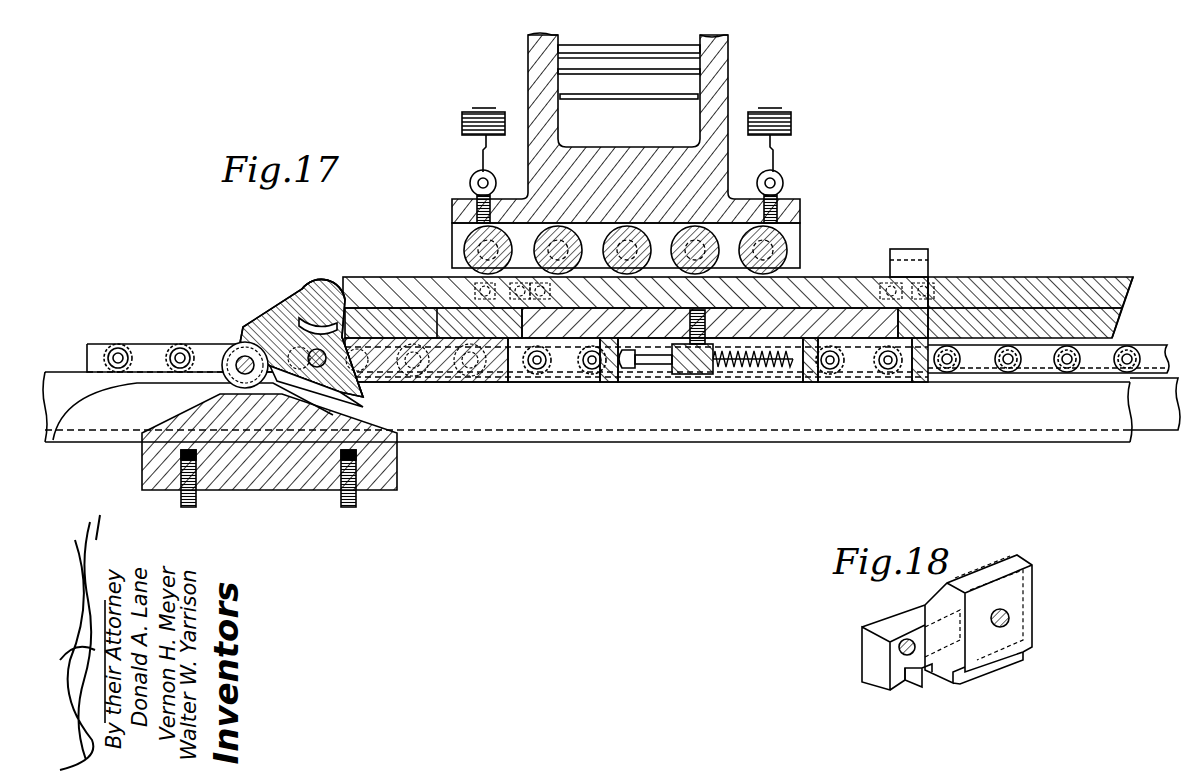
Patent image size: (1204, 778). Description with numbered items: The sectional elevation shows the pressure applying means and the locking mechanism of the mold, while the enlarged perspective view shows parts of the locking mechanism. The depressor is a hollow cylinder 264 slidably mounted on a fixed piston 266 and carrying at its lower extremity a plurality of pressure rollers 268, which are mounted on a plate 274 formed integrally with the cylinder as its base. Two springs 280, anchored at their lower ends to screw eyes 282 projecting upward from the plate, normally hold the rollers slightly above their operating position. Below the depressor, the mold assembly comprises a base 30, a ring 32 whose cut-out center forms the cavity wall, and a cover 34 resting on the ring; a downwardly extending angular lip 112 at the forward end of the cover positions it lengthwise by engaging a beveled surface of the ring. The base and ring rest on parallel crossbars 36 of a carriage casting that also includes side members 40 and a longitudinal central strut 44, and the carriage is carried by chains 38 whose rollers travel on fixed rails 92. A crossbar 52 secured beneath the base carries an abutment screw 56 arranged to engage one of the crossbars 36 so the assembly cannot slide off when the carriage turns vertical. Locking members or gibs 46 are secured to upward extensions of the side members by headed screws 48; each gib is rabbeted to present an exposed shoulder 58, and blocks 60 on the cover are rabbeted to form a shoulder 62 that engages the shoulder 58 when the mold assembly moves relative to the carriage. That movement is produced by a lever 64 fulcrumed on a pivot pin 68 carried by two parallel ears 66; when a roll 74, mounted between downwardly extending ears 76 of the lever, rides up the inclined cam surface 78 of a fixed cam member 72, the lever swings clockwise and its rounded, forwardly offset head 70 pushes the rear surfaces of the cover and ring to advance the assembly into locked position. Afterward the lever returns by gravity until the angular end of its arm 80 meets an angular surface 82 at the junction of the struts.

In FIG. 17, the hollow cylinder 264 is at (730, 62).
In FIG. 17, the fixed piston 266 is at (600, 104).
In FIG. 17, the pressure rollers 268 is at (690, 231).
In FIG. 17, the plate 274 is at (800, 201).
In FIG. 17, the springs 280 is at (487, 108).
In FIG. 17, the screw eyes 282 is at (472, 178).
In FIG. 17, the side members 40 is at (815, 277).
In FIG. 17, the base 30 is at (843, 322).
In FIG. 17, the cover 34 is at (975, 283).
In FIG. 17, the ring 32 is at (1010, 318).
In FIG. 17, the angular lip 112 is at (1122, 318).
In FIG. 17, the central strut 44 is at (401, 384).
In FIG. 17, the crossbars 36 is at (600, 378).
In FIG. 17, the crossbar 52 is at (676, 373).
In FIG. 17, the abutment screw 56 is at (745, 373).
In FIG. 17, the chains 38 is at (154, 317).
In FIG. 17, the fixed rails 92 is at (1163, 426).
In FIG. 17, the cam surface 78 is at (172, 423).
In FIG. 17, the cam member 72 is at (262, 488).
In FIG. 17, the ears 66 is at (345, 402).
In FIG. 17, the lever 64 is at (258, 318).
In FIG. 17, the head 70 is at (322, 292).
In FIG. 17, the downwardly extending ears 76 is at (250, 340).
In FIG. 17, the arm 80 is at (332, 405).
In FIG. 17, the angular surface 82 is at (359, 383).
In FIG. 17, the roll 74 is at (232, 357).
In FIG. 17, the pivot pin 68 is at (238, 378).
In FIG. 18, the gibs 46 is at (1018, 568).
In FIG. 18, the headed screws 48 is at (1010, 618).
In FIG. 18, the blocks 60 is at (866, 656).
In FIG. 18, the shoulder 62 is at (906, 682).
In FIG. 18, the shoulder 58 is at (926, 686).